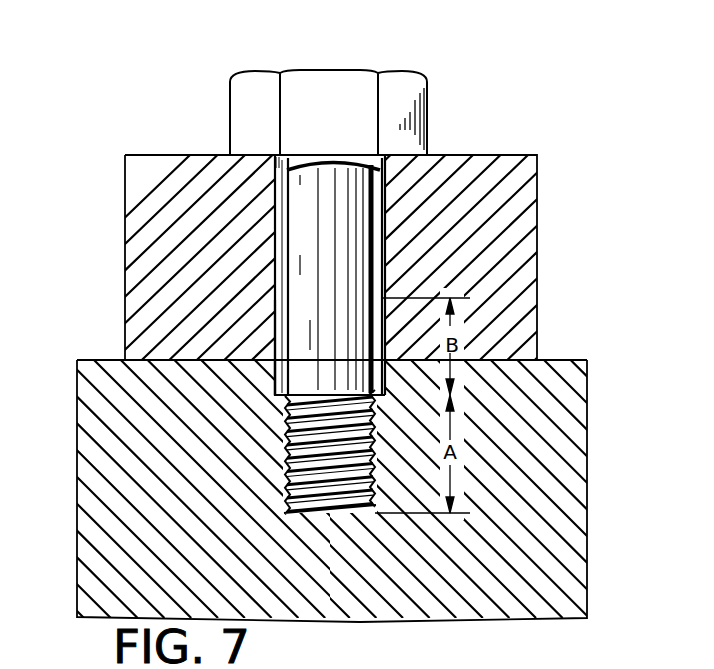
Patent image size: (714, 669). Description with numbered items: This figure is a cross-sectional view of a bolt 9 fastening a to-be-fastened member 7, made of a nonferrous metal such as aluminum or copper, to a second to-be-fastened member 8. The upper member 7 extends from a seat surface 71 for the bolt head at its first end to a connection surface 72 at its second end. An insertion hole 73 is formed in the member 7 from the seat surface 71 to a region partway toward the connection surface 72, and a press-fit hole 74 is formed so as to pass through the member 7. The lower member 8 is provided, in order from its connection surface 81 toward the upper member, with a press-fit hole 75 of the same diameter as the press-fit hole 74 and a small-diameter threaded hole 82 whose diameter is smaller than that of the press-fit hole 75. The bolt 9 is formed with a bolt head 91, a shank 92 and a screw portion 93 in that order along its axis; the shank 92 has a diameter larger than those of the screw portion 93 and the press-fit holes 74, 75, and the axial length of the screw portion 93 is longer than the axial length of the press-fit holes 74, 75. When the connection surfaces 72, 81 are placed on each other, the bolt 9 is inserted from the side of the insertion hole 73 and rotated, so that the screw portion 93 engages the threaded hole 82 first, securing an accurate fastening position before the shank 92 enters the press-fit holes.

The bolt 9 is at (388, 333).
The bolt head 91 is at (372, 70).
The shank 92 is at (352, 215).
The screw portion 93 is at (345, 502).
The to-be-fastened member 7 is at (500, 155).
The seat surface 71 is at (172, 155).
The connection surface 72 is at (545, 364).
The insertion hole 73 is at (282, 204).
The press-fit hole 74 is at (283, 329).
The press-fit hole 75 is at (283, 380).
The to-be-fastened member 8 is at (587, 415).
The connection surface 81 is at (562, 360).
The threaded hole 82 is at (285, 408).